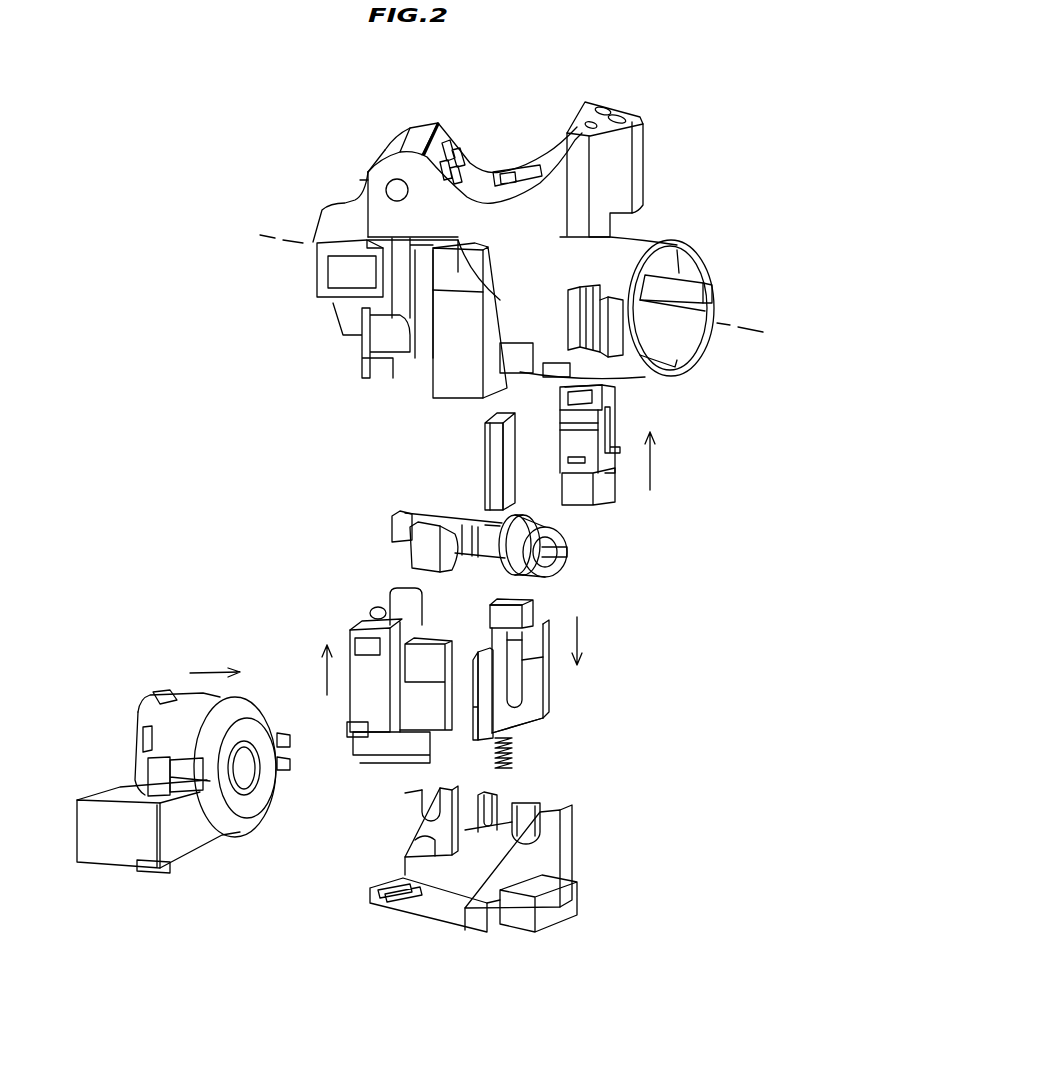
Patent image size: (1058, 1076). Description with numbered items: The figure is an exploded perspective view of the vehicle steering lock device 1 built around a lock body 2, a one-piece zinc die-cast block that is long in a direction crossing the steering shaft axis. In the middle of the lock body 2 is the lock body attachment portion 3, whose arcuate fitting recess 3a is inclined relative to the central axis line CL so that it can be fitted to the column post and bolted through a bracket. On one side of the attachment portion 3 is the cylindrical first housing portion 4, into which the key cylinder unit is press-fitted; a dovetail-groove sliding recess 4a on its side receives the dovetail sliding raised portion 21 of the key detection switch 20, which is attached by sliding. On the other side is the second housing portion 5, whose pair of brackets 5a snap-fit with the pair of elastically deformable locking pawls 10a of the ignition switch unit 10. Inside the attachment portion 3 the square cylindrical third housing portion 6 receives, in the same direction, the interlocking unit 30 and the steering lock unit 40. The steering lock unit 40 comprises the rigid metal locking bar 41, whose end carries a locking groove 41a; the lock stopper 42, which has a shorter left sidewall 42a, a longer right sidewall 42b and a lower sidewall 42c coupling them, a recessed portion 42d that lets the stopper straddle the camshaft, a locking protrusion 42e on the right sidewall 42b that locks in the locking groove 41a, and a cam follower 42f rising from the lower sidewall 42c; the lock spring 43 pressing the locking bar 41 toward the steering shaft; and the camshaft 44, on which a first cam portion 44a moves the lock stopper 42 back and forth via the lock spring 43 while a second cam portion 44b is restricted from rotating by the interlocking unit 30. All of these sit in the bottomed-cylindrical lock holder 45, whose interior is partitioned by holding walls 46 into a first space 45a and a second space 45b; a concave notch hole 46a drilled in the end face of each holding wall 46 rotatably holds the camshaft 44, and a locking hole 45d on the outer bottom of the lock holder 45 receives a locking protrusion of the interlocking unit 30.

The steering lock device 1 is at (741, 135).
The lock body 2 is at (703, 224).
The lock body attachment portion 3 is at (622, 138).
The fitting recess 3a is at (471, 165).
The first housing portion 4 is at (680, 332).
The sliding recess 4a is at (600, 307).
The second housing portion 5 is at (342, 203).
The brackets 5a is at (317, 288).
The third housing portion 6 is at (445, 393).
The ignition switch unit 10 is at (125, 681).
The locking pawls 10a is at (165, 768).
The key detection switch 20 is at (632, 503).
The sliding raised portion 21 is at (607, 385).
The interlocking unit 30 is at (333, 604).
The steering lock unit 40 is at (767, 752).
The locking bar 41 is at (485, 468).
The locking groove 41a is at (515, 478).
The lock stopper 42 is at (547, 705).
The left sidewall 42a is at (490, 693).
The right sidewall 42b is at (532, 680).
The lower sidewall 42c is at (513, 725).
The recessed portion 42d is at (515, 667).
The locking protrusion 42e is at (505, 615).
The cam follower 42f is at (475, 705).
The lock spring 43 is at (512, 757).
The camshaft 44 is at (567, 549).
The first cam portion 44a is at (498, 530).
The second cam portion 44b is at (420, 548).
The lock holder 45 is at (560, 857).
The first space 45a is at (517, 810).
The second space 45b is at (407, 840).
The locking hole 45d is at (392, 900).
The holding walls 46 is at (537, 862).
The notch hole 46a is at (527, 827).
The central axis line CL is at (753, 333).